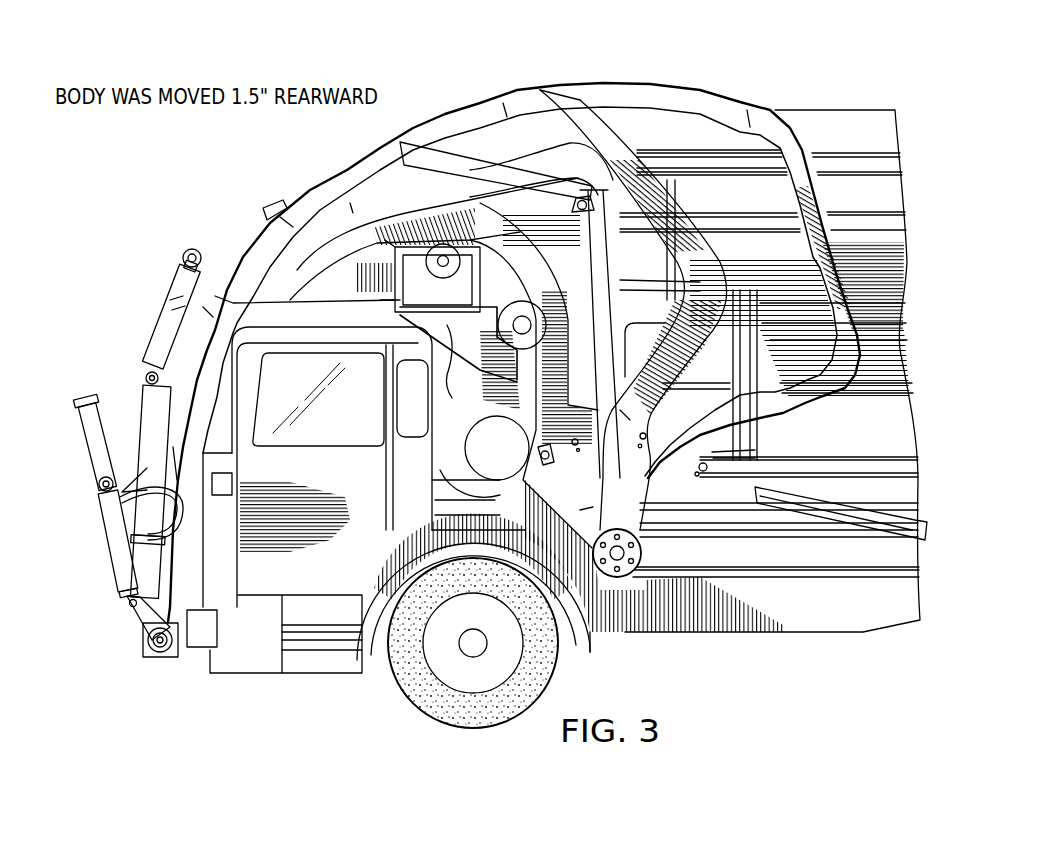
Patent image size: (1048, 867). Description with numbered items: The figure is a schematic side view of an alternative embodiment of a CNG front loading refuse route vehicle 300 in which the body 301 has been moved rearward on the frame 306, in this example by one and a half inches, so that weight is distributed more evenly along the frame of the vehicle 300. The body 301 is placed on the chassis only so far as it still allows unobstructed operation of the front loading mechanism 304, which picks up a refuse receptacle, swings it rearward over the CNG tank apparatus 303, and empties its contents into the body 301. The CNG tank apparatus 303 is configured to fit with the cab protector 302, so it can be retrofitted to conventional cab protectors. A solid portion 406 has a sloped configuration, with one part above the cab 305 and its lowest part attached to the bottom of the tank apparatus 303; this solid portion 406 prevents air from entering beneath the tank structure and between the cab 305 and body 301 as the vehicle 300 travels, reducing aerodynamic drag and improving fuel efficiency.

The front loading refuse route vehicle 300 is at (800, 77).
The body 301 is at (867, 204).
The cab protector 302 is at (535, 208).
The CNG tank apparatus 303 is at (387, 277).
The front loading mechanism 304 is at (133, 637).
The cab 305 is at (268, 578).
The frame 306 is at (698, 605).
The solid portion 406 is at (452, 345).